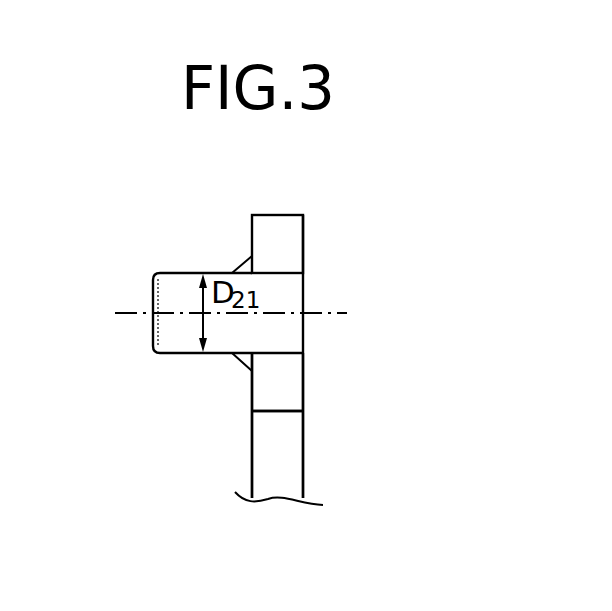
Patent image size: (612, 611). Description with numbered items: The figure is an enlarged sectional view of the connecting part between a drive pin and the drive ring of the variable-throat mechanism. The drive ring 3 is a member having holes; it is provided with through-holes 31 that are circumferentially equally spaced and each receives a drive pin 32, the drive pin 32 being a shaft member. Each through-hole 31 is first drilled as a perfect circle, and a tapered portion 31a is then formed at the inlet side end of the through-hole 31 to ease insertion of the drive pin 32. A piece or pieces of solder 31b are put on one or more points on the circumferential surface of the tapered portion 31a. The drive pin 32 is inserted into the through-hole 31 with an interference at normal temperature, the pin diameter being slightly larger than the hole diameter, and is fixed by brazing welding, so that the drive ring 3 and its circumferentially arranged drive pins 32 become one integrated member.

The drive ring 3 is at (303, 238).
The through-hole 31 is at (277, 353).
The tapered portion 31a is at (303, 253).
The solder 31b is at (245, 272).
The drive pin 32 is at (185, 347).